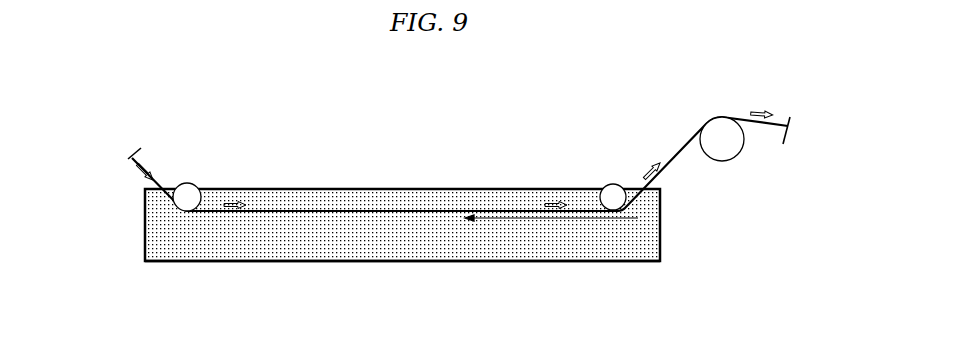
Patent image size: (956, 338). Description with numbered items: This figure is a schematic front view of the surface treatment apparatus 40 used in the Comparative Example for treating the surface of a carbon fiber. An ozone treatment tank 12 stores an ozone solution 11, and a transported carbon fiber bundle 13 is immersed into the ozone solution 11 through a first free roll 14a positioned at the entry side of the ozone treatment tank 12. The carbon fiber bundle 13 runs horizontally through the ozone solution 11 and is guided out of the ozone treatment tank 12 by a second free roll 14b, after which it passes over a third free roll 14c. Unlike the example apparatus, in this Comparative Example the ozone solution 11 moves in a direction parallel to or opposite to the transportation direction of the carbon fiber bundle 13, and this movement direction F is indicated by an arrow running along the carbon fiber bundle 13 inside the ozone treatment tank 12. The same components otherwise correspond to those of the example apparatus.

The surface treatment apparatus 40 is at (400, 154).
The ozone solution 11 is at (155, 218).
The ozone treatment tank 12 is at (280, 262).
The carbon fiber bundle 13 is at (138, 165).
The first free roll 14a is at (188, 183).
The second free roll 14b is at (612, 184).
The third free roll 14c is at (732, 145).
The movement direction F is at (527, 220).